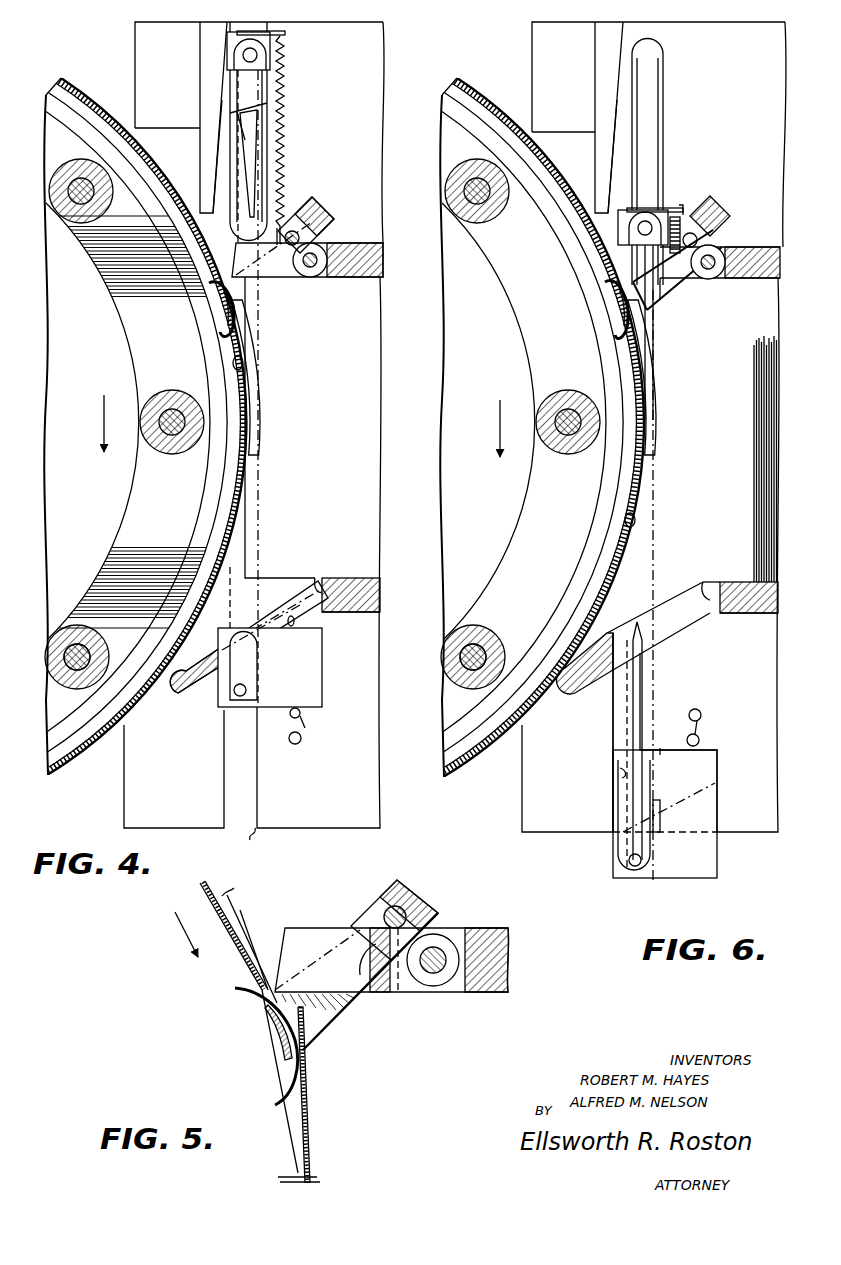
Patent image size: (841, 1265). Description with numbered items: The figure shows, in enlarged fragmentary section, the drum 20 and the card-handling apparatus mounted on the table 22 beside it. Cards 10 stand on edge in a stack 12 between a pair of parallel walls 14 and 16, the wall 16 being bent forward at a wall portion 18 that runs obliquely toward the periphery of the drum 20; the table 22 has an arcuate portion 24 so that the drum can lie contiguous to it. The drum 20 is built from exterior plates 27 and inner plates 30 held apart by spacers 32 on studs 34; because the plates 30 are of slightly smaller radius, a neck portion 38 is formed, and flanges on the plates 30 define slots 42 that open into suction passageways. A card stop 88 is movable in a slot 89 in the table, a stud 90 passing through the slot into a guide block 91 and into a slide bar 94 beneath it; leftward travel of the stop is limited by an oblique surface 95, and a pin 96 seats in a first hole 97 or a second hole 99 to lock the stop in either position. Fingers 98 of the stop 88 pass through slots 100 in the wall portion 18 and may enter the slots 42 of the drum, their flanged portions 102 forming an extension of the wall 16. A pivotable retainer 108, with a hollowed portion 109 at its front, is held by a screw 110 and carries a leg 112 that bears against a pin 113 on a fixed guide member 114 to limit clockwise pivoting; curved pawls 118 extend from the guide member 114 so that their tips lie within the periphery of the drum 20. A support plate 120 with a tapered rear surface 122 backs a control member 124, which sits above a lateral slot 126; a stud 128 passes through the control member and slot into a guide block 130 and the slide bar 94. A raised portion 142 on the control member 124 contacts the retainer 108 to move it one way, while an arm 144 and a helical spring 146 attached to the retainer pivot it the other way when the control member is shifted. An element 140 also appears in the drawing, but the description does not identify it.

In FIG. 4, the card 10 is at (68, 86).
In FIG. 6, the card 10 is at (470, 768).
In FIG. 5, the card 10 is at (208, 889).
In FIG. 6, the stack 12 is at (780, 426).
In FIG. 4, the wall 14 is at (360, 280).
In FIG. 6, the wall 14 is at (763, 279).
In FIG. 5, the wall 14 is at (510, 959).
In FIG. 4, the wall 16 is at (345, 590).
In FIG. 6, the wall 16 is at (747, 590).
In FIG. 4, the wall portion 18 is at (185, 682).
In FIG. 6, the wall portion 18 is at (590, 681).
In FIG. 4, the drum 20 is at (42, 544).
In FIG. 6, the drum 20 is at (441, 731).
In FIG. 5, the drum 20 is at (253, 976).
In FIG. 4, the table 22 is at (372, 663).
In FIG. 6, the table 22 is at (770, 766).
In FIG. 5, the table 22 is at (240, 896).
In FIG. 4, the arcuate portion 24 is at (244, 362).
In FIG. 6, the arcuate portion 24 is at (636, 516).
In FIG. 4, the exterior plates 27 is at (65, 429).
In FIG. 6, the exterior plates 27 is at (463, 537).
In FIG. 4, the plates 30 is at (143, 333).
In FIG. 6, the plates 30 is at (535, 341).
In FIG. 4, the spacers 32 is at (172, 456).
In FIG. 6, the spacers 32 is at (569, 458).
In FIG. 4, the studs 34 is at (81, 648).
In FIG. 6, the studs 34 is at (460, 669).
In FIG. 4, the neck portion 38 is at (80, 768).
In FIG. 6, the neck portion 38 is at (460, 82).
In FIG. 4, the slots 42 is at (242, 434).
In FIG. 6, the slots 42 is at (640, 446).
In FIG. 4, the card stop 88 is at (323, 656).
In FIG. 6, the card stop 88 is at (722, 858).
In FIG. 4, the slot 89 is at (255, 828).
In FIG. 6, the slot 89 is at (620, 774).
In FIG. 4, the stud 90 is at (235, 693).
In FIG. 6, the stud 90 is at (635, 867).
In FIG. 4, the guide block 91 is at (262, 684).
In FIG. 6, the guide block 91 is at (665, 860).
In FIG. 4, the slide bar 94 is at (262, 396).
In FIG. 6, the slide bar 94 is at (657, 556).
In FIG. 4, the surface 95 is at (292, 628).
In FIG. 6, the surface 95 is at (674, 804).
In FIG. 4, the pin 96 is at (305, 728).
In FIG. 6, the pin 96 is at (700, 736).
In FIG. 4, the first hole 97 is at (300, 715).
In FIG. 6, the first hole 97 is at (701, 712).
In FIG. 4, the fingers 98 is at (240, 506).
In FIG. 6, the fingers 98 is at (615, 722).
In FIG. 4, the second hole 99 is at (294, 745).
In FIG. 6, the second hole 99 is at (700, 741).
In FIG. 4, the slots 100 is at (316, 576).
In FIG. 6, the slots 100 is at (704, 612).
In FIG. 4, the flanged portions 102 is at (283, 580).
In FIG. 6, the flanged portions 102 is at (660, 750).
In FIG. 4, the retainer 108 is at (290, 280).
In FIG. 6, the retainer 108 is at (677, 302).
In FIG. 5, the retainer 108 is at (412, 997).
In FIG. 6, the hollowed portion 109 is at (687, 296).
In FIG. 5, the hollowed portion 109 is at (347, 1004).
In FIG. 6, the screw 110 is at (713, 272).
In FIG. 5, the screw 110 is at (440, 951).
In FIG. 4, the leg 112 is at (283, 290).
In FIG. 5, the leg 112 is at (368, 985).
In FIG. 4, the pin 113 is at (294, 231).
In FIG. 6, the pin 113 is at (690, 240).
In FIG. 5, the pin 113 is at (405, 908).
In FIG. 4, the guide member 114 is at (336, 218).
In FIG. 6, the guide member 114 is at (731, 214).
In FIG. 5, the guide member 114 is at (352, 925).
In FIG. 4, the pawls 118 is at (210, 285).
In FIG. 6, the pawls 118 is at (606, 282).
In FIG. 5, the pawls 118 is at (272, 1102).
In FIG. 4, the support plate 120 is at (210, 110).
In FIG. 6, the support plate 120 is at (595, 63).
In FIG. 4, the rear surface 122 is at (226, 135).
In FIG. 6, the rear surface 122 is at (620, 121).
In FIG. 4, the control member 124 is at (256, 33).
In FIG. 6, the control member 124 is at (641, 208).
In FIG. 4, the slot 126 is at (248, 131).
In FIG. 6, the slot 126 is at (660, 91).
In FIG. 4, the stud 128 is at (243, 55).
In FIG. 6, the stud 128 is at (645, 228).
In FIG. 4, the guide block 130 is at (236, 31).
In FIG. 6, the guide block 130 is at (661, 210).
In FIG. 4, the blade 140 is at (252, 149).
In FIG. 6, the blade 140 is at (650, 352).
In FIG. 4, the raised portion 142 is at (262, 113).
In FIG. 4, the arm 144 is at (286, 34).
In FIG. 6, the arm 144 is at (690, 209).
In FIG. 4, the helical spring 146 is at (285, 80).
In FIG. 6, the helical spring 146 is at (682, 229).